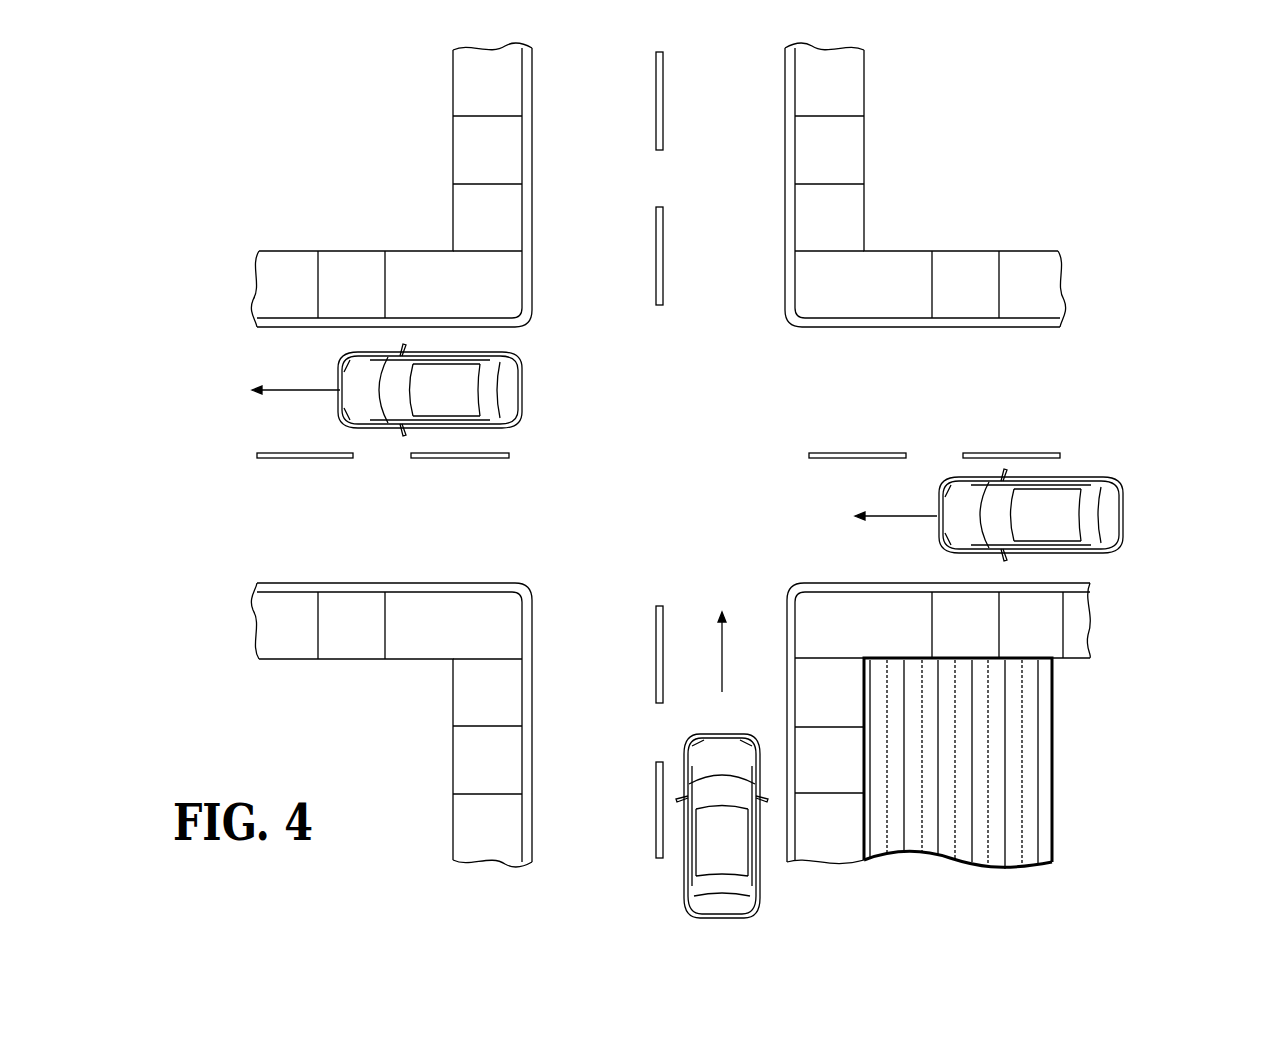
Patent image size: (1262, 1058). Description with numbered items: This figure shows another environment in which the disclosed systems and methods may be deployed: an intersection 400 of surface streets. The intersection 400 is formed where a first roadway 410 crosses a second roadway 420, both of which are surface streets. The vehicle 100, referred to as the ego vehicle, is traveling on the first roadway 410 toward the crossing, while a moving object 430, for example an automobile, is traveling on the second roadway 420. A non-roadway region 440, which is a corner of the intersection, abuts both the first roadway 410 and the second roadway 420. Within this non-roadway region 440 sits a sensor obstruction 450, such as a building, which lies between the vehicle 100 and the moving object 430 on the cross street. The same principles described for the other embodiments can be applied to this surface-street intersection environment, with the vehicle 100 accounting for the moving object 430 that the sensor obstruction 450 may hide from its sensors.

The vehicle 100 is at (726, 905).
The intersection 400 is at (896, 233).
The first roadway 410 is at (573, 762).
The second roadway 420 is at (927, 395).
The moving object 430 is at (1094, 512).
The non-roadway region 440 is at (1062, 692).
The sensor obstruction 450 is at (1017, 745).